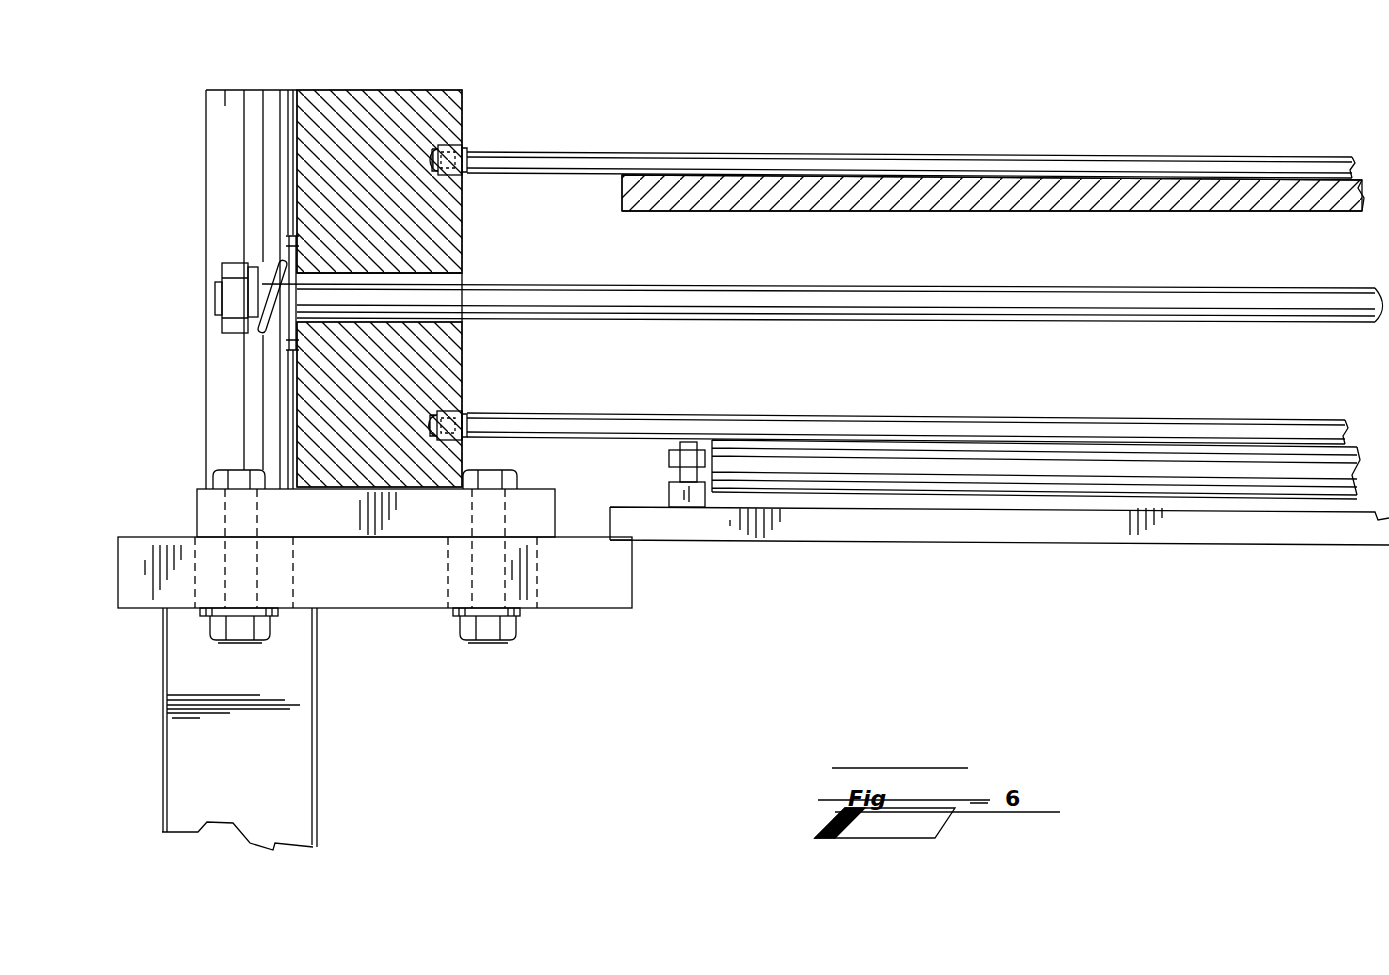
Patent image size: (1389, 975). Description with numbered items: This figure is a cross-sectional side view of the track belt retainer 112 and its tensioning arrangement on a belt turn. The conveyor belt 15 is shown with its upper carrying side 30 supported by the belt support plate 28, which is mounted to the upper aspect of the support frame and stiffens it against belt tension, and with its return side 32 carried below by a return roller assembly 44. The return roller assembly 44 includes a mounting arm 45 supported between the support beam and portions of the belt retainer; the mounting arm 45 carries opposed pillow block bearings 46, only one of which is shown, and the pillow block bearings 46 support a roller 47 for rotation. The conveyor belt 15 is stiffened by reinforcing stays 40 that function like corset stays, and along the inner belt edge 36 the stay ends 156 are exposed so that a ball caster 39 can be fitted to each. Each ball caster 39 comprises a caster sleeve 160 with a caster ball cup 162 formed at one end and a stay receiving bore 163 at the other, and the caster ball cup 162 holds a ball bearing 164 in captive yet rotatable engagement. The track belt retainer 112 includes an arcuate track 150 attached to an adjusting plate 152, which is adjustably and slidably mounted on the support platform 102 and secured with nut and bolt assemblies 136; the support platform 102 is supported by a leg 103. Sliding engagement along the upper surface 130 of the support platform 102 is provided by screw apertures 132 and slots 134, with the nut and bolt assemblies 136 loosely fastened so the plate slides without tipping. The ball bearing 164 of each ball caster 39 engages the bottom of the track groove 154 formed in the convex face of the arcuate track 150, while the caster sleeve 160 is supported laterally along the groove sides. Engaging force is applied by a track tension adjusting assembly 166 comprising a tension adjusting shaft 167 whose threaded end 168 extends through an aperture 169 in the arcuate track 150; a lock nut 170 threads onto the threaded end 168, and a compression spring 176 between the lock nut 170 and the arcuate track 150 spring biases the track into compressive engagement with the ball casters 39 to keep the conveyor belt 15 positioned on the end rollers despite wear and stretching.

The conveyor belt 15 is at (930, 131).
The belt support plate 28 is at (1035, 212).
The upper carrying side 30 is at (723, 152).
The return side 32 is at (985, 446).
The inner belt edge 36 is at (447, 433).
The ball caster 39 is at (440, 410).
The reinforcing stay 40 is at (780, 152).
The return roller assembly 44 is at (857, 558).
The mounting arm 45 is at (955, 545).
The pillow block bearing 46 is at (670, 465).
The roller 47 is at (1060, 497).
The support platform 102 is at (583, 610).
The leg 103 is at (317, 762).
The track belt retainer 112 is at (285, 62).
The upper surface 130 is at (167, 537).
The screw aperture 132 is at (257, 526).
The slot 134 is at (285, 570).
The nut and bolt assembly 136 is at (212, 484).
The arcuate track 150 is at (357, 90).
The adjusting plate 152 is at (197, 489).
The track groove 154 is at (468, 176).
The stay end 156 is at (468, 146).
The caster sleeve 160 is at (470, 440).
The caster ball cup 162 is at (428, 412).
The stay receiving bore 163 is at (468, 434).
The ball bearing 164 is at (428, 414).
The track tension adjusting assembly 166 is at (190, 290).
The tension adjusting shaft 167 is at (537, 284).
The threaded end 168 is at (300, 280).
The aperture 169 is at (373, 273).
The lock nut 170 is at (222, 255).
The compression spring 176 is at (245, 265).